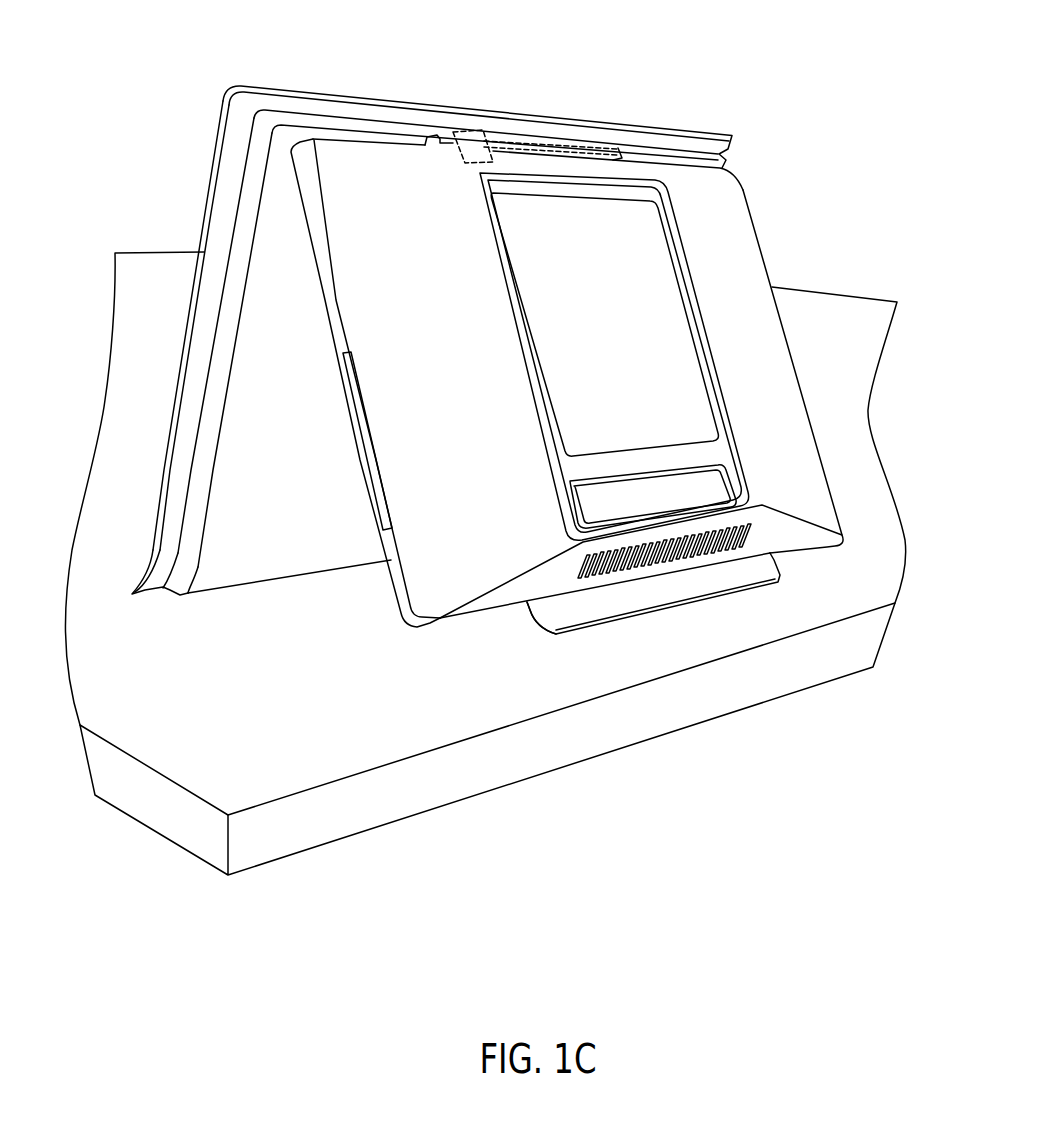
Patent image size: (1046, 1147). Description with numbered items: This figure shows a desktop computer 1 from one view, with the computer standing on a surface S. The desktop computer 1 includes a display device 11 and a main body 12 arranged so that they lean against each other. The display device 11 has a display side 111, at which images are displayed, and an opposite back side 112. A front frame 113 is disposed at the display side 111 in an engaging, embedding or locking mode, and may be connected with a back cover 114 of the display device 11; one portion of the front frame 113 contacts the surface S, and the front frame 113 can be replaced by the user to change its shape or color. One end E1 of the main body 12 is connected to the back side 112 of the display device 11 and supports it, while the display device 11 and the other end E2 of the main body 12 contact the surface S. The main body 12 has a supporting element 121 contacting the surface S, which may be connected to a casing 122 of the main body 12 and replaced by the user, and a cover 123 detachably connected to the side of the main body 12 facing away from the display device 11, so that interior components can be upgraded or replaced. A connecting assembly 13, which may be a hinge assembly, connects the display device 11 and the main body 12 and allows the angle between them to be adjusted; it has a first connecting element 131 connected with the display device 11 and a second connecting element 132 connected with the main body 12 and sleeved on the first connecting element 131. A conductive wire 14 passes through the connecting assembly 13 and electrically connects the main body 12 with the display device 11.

The desktop computer 1 is at (835, 75).
The display device 11 is at (479, 339).
The display side 111 is at (206, 186).
The back side 112 is at (308, 579).
The front frame 113 is at (273, 89).
The back cover 114 is at (222, 572).
The main body 12 is at (587, 412).
The supporting element 121 is at (770, 568).
The casing 122 is at (768, 322).
The cover 123 is at (657, 265).
The connecting assembly 13 is at (570, 87).
The first connecting element 131 is at (583, 148).
The second connecting element 132 is at (607, 160).
The conductive wire 14 is at (474, 130).
The one end of the main body E1 is at (378, 141).
The other end of the main body E2 is at (536, 620).
The surface S is at (547, 758).